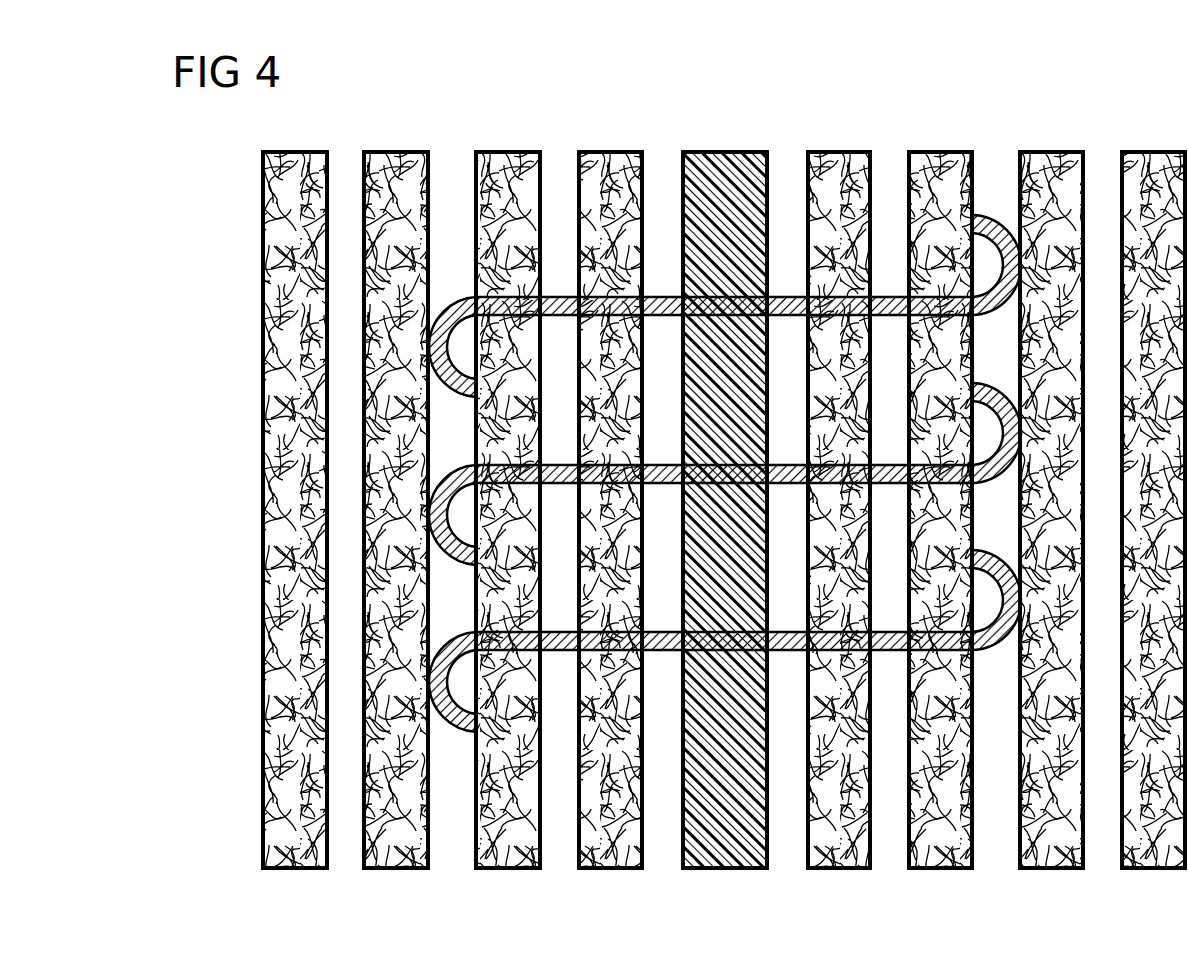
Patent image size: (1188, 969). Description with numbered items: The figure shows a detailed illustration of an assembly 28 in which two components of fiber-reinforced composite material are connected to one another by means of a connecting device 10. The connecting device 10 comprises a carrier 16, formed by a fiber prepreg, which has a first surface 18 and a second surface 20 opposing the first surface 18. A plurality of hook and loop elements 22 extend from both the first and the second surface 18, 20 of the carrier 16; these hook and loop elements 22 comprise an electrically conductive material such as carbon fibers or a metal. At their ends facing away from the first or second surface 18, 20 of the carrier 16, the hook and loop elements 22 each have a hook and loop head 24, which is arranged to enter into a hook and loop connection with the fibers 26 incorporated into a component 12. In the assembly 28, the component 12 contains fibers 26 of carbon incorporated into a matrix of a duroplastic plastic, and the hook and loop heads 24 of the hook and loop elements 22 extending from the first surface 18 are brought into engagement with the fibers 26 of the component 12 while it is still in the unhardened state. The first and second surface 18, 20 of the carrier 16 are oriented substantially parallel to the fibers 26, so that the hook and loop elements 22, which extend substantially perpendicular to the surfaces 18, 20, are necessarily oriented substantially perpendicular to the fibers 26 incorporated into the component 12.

The connecting device 10 is at (734, 139).
The first component 12 is at (240, 402).
The carrier 16 is at (716, 152).
The first surface 18 is at (683, 346).
The second surface 20 is at (767, 371).
The hook and loop elements 22 is at (566, 297).
The hook and loop head 24 is at (455, 392).
The fibers 26 is at (300, 152).
The assembly 28 is at (975, 106).